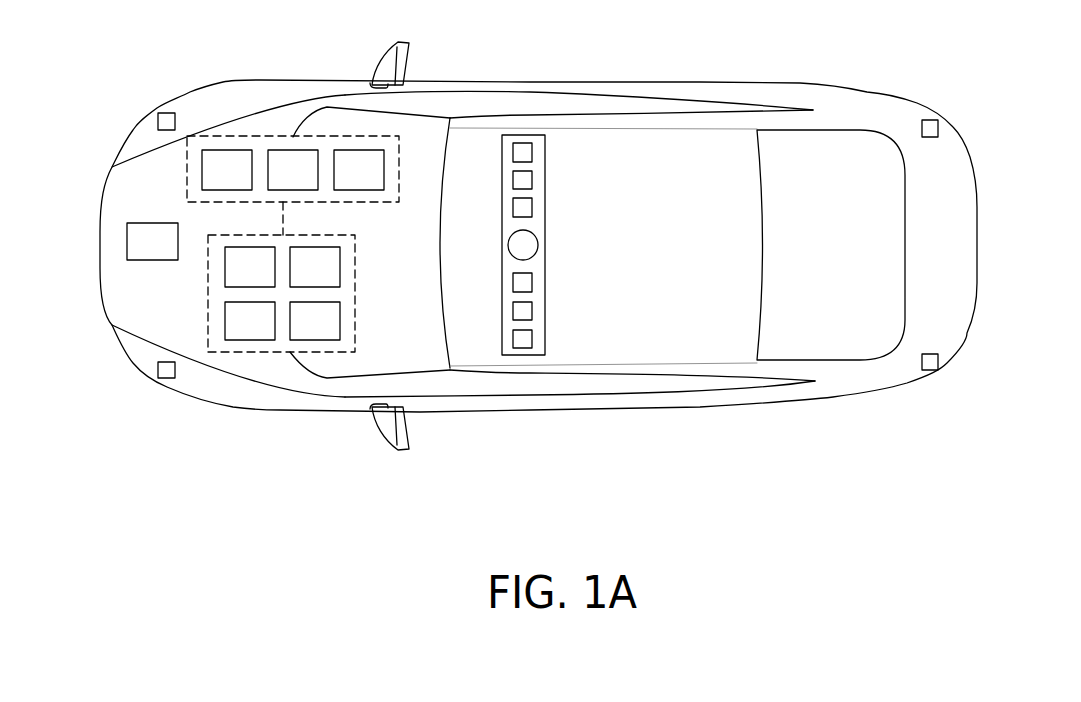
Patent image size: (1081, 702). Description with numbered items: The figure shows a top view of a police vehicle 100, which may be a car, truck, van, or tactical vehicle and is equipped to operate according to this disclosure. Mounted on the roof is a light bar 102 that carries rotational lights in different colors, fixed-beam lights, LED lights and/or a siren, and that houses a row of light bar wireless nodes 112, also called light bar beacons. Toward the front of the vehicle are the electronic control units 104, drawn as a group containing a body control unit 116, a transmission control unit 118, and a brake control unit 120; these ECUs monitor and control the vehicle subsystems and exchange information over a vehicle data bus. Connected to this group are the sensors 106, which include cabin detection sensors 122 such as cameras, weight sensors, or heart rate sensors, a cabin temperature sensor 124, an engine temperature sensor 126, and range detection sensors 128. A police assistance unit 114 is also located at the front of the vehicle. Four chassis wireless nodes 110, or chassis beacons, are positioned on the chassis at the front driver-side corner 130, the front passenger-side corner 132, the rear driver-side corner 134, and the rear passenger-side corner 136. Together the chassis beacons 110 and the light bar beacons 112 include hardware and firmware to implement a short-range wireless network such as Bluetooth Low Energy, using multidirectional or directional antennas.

The police vehicle 100 is at (977, 245).
The light bar 102 is at (522, 135).
The electronic control units 104 is at (265, 136).
The sensors 106 is at (263, 352).
The chassis wireless nodes 110 is at (168, 113).
The light bar wireless nodes 112 is at (532, 152).
The police assistance unit 114 is at (169, 254).
The body control unit 116 is at (244, 181).
The transmission control unit 118 is at (310, 181).
The brake control unit 120 is at (376, 181).
The cabin detection sensors 122 is at (267, 279).
The cabin temperature sensor 124 is at (332, 279).
The engine temperature sensor 126 is at (267, 332).
The range detection sensors 128 is at (332, 332).
The front driver-side corner 130 is at (128, 367).
The front passenger-side corner 132 is at (128, 122).
The rear driver-side corner 134 is at (963, 360).
The rear passenger-side corner 136 is at (963, 128).